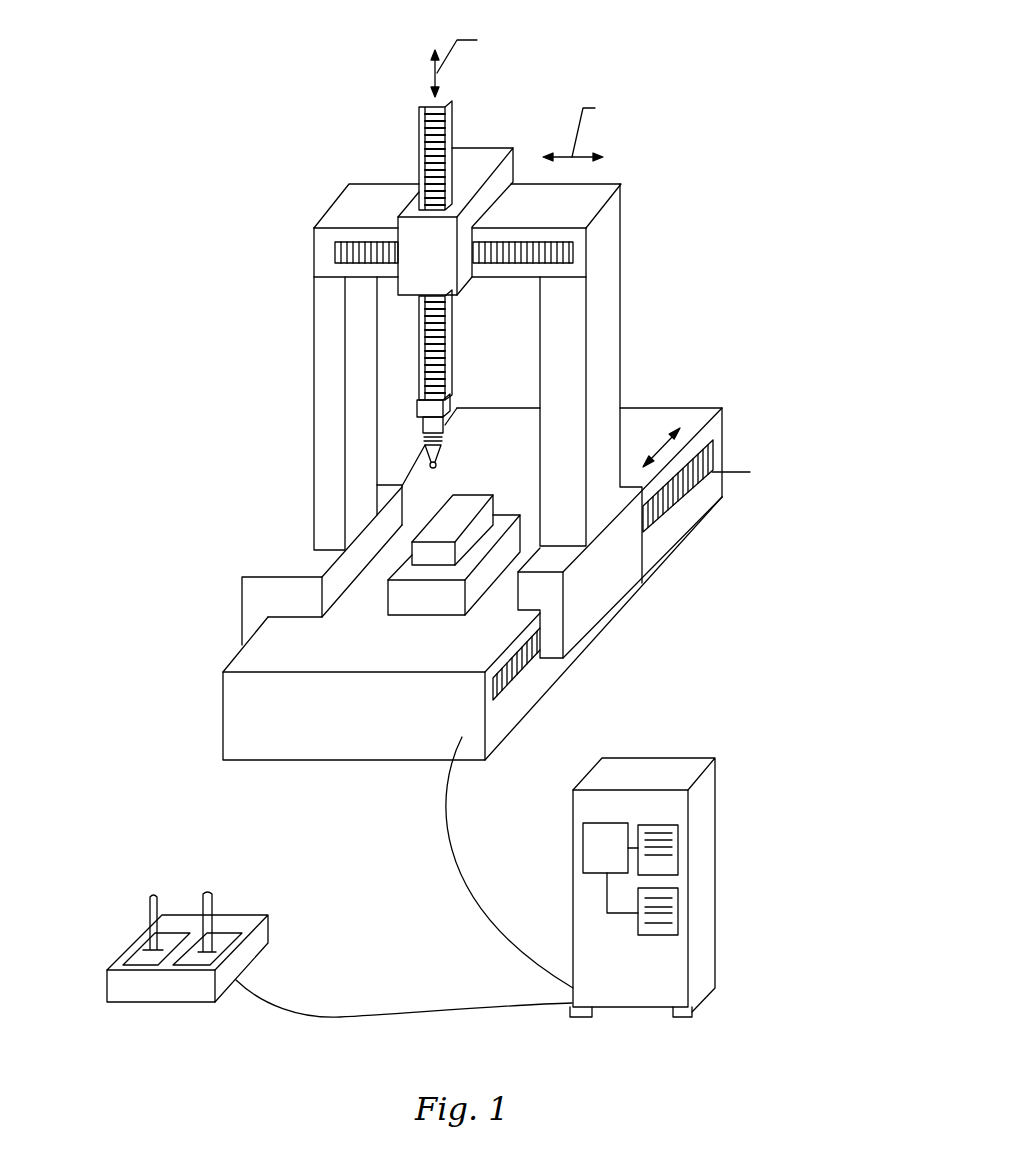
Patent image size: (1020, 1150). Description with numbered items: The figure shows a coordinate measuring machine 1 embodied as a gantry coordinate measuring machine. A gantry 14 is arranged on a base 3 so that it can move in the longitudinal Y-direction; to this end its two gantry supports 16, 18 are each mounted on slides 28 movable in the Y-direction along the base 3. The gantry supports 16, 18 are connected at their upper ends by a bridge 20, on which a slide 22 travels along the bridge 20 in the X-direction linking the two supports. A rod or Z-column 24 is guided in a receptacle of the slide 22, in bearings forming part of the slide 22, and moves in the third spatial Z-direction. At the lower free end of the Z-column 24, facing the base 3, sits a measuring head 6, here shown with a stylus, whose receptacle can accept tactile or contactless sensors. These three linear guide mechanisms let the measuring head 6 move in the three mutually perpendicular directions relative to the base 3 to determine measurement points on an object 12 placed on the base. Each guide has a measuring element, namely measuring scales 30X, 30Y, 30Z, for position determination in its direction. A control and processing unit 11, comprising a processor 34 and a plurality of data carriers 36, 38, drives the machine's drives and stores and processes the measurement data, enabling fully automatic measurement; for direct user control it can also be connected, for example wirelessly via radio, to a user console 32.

The coordinate measuring machine 1 is at (468, 409).
The base 3 is at (240, 734).
The measuring head 6 is at (460, 428).
The control and processing unit 11 is at (626, 849).
The object 12 is at (440, 592).
The gantry 14 is at (449, 347).
The gantry support 16 is at (326, 333).
The gantry support 18 is at (612, 340).
The bridge 20 is at (343, 215).
The slide 22 is at (417, 210).
The Z-column 24 is at (432, 107).
The slide 28 is at (608, 563).
The measuring scale 30X is at (565, 250).
The measuring scale 30Y is at (672, 490).
The measuring scale 30Z is at (434, 147).
The user console 32 is at (266, 890).
The processor 34 is at (583, 833).
The data carrier 36 is at (670, 863).
The data carrier 38 is at (677, 913).